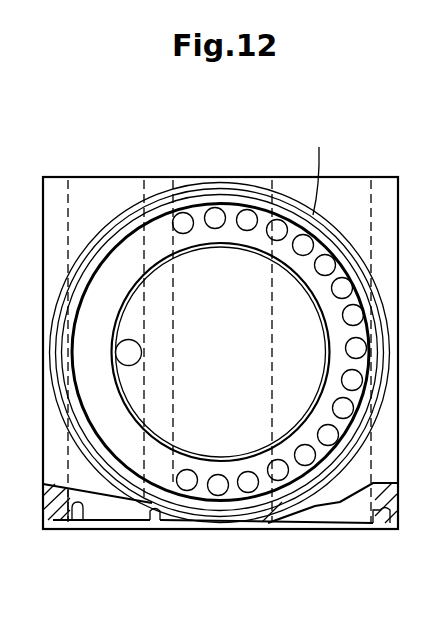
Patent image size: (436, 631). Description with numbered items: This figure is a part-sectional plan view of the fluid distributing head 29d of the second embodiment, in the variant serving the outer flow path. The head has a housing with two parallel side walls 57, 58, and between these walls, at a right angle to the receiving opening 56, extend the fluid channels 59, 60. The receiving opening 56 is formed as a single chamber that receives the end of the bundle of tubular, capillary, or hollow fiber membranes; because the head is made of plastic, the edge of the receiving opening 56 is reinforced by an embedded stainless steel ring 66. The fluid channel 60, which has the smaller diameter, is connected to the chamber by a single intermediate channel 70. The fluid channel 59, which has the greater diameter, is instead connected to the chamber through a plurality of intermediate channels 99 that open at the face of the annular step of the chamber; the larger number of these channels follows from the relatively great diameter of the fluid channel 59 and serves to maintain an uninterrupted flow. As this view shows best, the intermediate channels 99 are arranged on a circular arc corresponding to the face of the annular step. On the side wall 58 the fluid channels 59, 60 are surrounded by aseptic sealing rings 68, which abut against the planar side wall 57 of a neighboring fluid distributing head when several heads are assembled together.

The fluid distributing head 29d is at (100, 166).
The side wall 57 is at (236, 170).
The intermediate channels 99 is at (300, 235).
The receiving opening 56 is at (108, 299).
The intermediate channel 70 is at (120, 353).
The stainless steel ring 66 is at (82, 449).
The fluid channel 60 is at (73, 504).
The aseptic sealing rings 68 is at (158, 518).
The side wall 58 is at (226, 533).
The fluid channel 59 is at (350, 528).